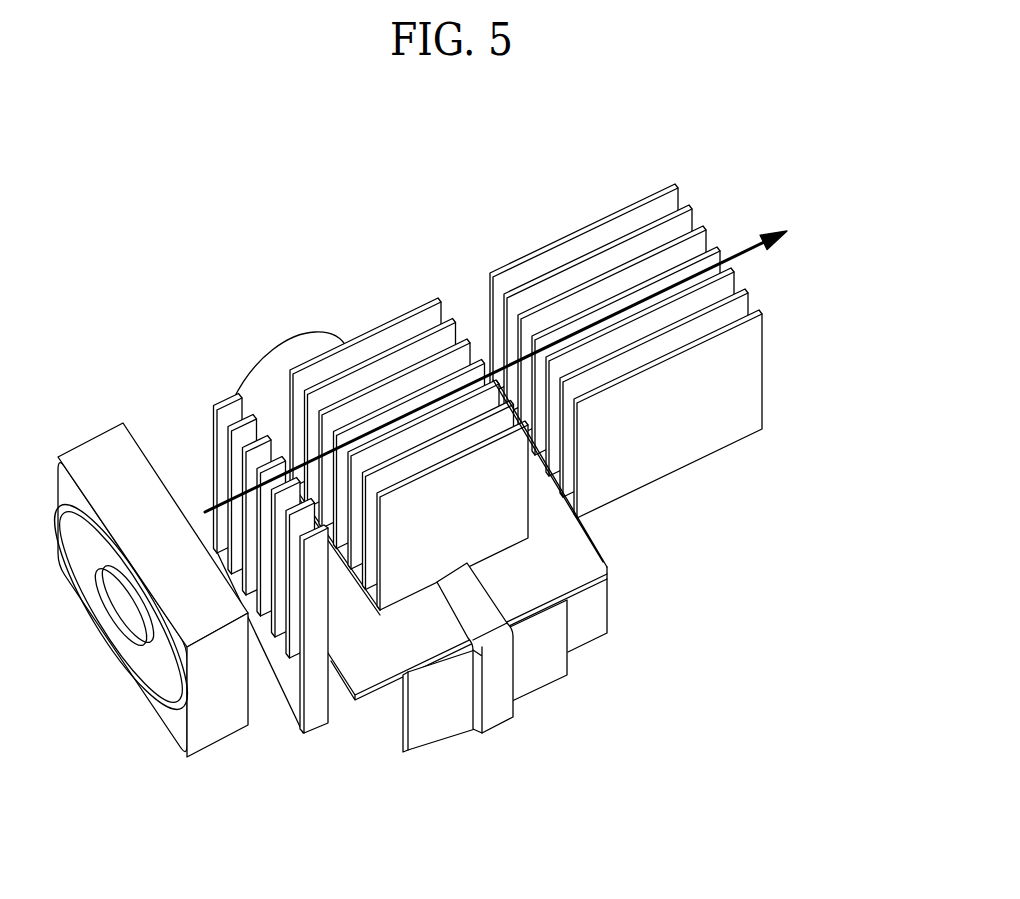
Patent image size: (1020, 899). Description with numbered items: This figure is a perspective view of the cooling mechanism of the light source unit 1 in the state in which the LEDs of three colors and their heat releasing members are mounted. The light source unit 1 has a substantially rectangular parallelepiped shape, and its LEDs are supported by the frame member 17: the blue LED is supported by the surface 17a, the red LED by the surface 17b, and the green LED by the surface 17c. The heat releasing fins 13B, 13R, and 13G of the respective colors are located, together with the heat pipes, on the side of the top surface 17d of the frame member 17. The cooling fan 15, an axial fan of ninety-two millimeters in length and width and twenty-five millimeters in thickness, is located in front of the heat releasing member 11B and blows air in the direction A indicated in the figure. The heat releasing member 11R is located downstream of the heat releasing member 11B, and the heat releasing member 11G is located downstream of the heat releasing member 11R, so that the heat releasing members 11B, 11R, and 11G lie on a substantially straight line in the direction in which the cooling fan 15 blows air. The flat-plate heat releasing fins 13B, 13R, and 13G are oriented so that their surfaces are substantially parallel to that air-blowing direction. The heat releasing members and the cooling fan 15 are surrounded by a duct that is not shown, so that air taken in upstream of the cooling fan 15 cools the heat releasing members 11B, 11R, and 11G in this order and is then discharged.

The light source unit 1 is at (461, 499).
The heat releasing member 11B is at (210, 495).
The heat releasing member 11R is at (380, 405).
The heat releasing member 11G is at (606, 333).
The heat releasing fin 13B is at (229, 412).
The heat releasing fin 13R is at (405, 328).
The heat releasing fin 13G is at (604, 232).
The cooling fan 15 is at (101, 448).
The frame member 17 is at (486, 586).
The surface 17a is at (349, 738).
The surface 17b is at (378, 733).
The surface 17c is at (606, 567).
The top surface 17d is at (583, 553).